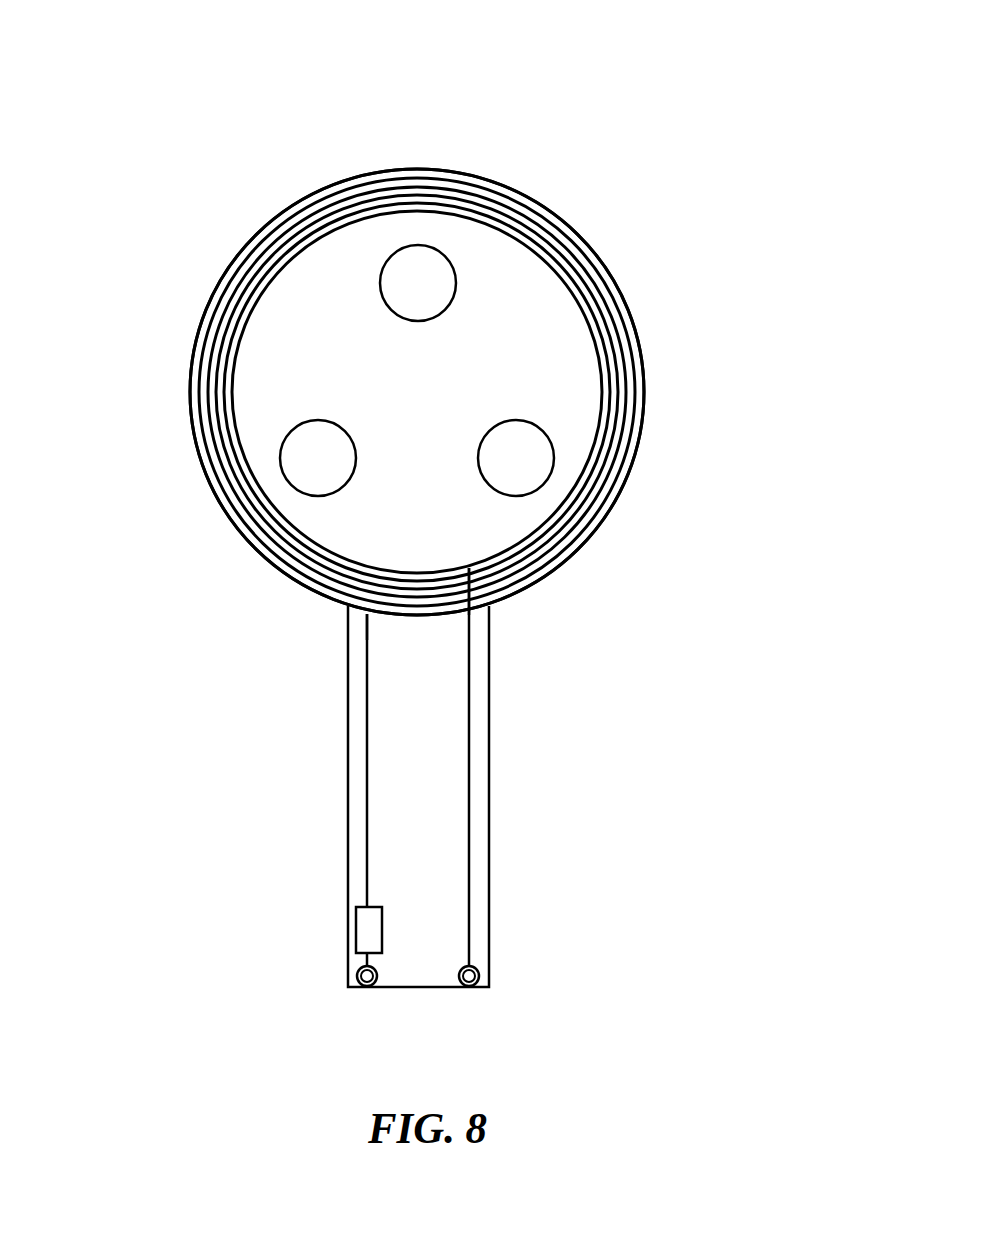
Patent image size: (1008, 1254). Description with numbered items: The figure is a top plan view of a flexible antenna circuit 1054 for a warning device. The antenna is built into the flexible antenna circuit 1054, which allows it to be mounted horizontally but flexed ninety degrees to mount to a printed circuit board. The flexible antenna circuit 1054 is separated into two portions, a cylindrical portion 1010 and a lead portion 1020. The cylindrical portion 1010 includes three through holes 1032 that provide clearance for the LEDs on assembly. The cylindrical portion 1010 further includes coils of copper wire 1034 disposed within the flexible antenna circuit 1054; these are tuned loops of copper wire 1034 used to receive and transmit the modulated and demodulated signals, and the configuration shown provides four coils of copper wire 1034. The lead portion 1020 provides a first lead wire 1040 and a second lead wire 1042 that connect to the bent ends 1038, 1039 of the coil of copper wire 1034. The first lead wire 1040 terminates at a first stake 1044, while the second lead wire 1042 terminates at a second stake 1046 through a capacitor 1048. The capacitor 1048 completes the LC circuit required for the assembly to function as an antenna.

The cylindrical portion 1010 is at (645, 379).
The lead portion 1020 is at (427, 777).
The through hole 1032 is at (400, 262).
The coil of copper wire 1034 is at (218, 288).
The bent end 1038 is at (470, 573).
The bent end 1039 is at (367, 618).
The first lead wire 1040 is at (470, 832).
The second lead wire 1042 is at (367, 824).
The first stake 1044 is at (480, 977).
The second stake 1046 is at (357, 970).
The capacitor 1048 is at (371, 932).
The flexible antenna circuit 1054 is at (472, 338).